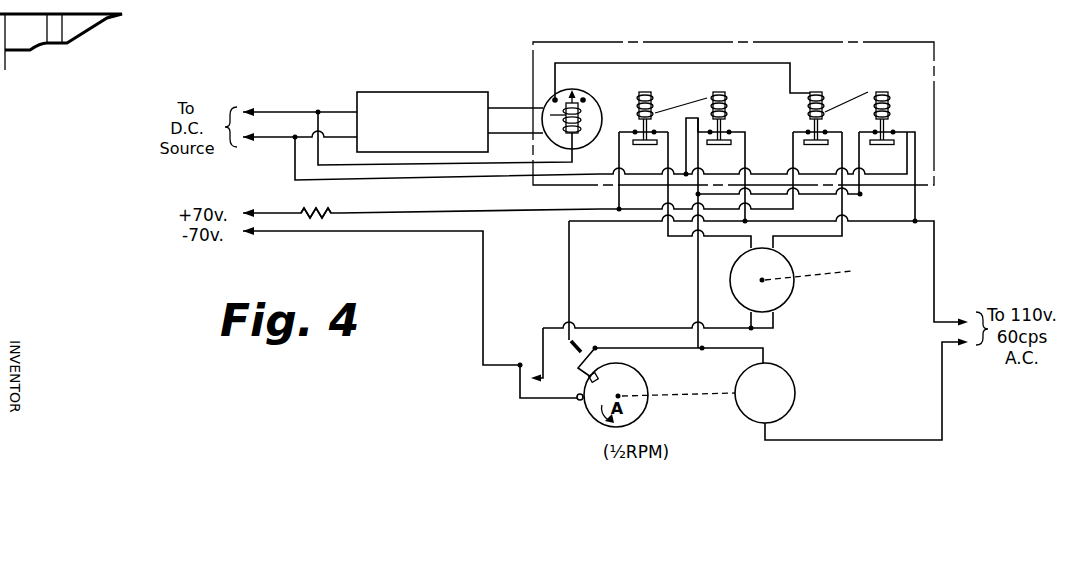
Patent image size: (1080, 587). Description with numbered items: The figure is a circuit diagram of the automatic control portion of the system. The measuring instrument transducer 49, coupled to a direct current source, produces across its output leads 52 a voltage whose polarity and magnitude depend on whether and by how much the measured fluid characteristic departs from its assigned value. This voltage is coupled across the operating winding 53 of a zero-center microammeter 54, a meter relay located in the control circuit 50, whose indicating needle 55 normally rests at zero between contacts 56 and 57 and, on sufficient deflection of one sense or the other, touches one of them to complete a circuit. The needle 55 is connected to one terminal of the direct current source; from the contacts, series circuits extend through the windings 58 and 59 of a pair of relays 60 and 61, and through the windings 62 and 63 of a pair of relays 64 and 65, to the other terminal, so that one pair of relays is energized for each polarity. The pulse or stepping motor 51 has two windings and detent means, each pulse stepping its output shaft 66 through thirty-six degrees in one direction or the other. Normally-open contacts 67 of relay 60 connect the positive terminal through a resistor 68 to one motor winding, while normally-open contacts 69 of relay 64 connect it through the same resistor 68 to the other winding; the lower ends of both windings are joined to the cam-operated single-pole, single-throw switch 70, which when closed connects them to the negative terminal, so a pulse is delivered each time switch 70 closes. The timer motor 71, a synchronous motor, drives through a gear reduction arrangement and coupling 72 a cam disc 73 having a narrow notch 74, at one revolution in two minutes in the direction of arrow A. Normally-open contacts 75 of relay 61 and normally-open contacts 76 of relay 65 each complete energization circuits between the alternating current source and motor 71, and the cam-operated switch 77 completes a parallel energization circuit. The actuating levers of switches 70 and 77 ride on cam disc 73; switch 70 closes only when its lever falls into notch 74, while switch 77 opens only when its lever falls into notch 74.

The measuring instrument transducer 49 is at (445, 105).
The control circuit 50 is at (936, 135).
The pulse or stepping motor 51 is at (793, 260).
The output leads 52 is at (519, 132).
The operating winding 53 is at (562, 116).
The zero-center microammeter 54 is at (554, 99).
The indicating needle 55 is at (574, 93).
The contact 56 is at (555, 98).
The contact 57 is at (584, 99).
The winding 58 is at (656, 96).
The winding 59 is at (726, 100).
The relay 60 is at (645, 92).
The relay 61 is at (716, 93).
The winding 62 is at (823, 97).
The winding 63 is at (893, 103).
The relay 64 is at (812, 91).
The relay 65 is at (884, 91).
The motor output shaft 66 is at (850, 272).
The normally-open contacts 67 is at (642, 128).
The resistor 68 is at (332, 208).
The normally-open contacts 69 is at (808, 131).
The cam-operated single-pole, single-throw switch 70 is at (535, 383).
The timer motor 71 is at (790, 377).
The gear reduction arrangement and coupling 72 is at (680, 397).
The cam disc 73 is at (638, 382).
The notch 74 is at (602, 375).
The normally-open contacts 75 is at (728, 133).
The normally-open contacts 76 is at (893, 130).
The cam-operated single-pole, single-throw switch 77 is at (583, 340).